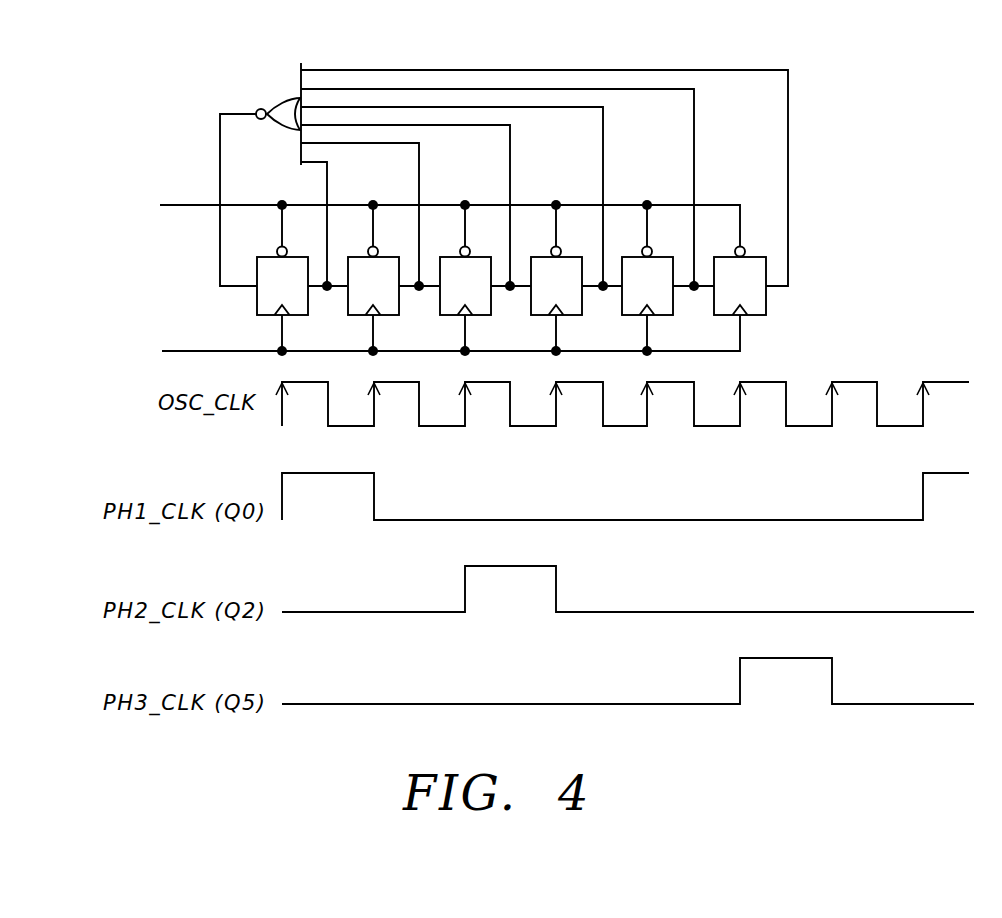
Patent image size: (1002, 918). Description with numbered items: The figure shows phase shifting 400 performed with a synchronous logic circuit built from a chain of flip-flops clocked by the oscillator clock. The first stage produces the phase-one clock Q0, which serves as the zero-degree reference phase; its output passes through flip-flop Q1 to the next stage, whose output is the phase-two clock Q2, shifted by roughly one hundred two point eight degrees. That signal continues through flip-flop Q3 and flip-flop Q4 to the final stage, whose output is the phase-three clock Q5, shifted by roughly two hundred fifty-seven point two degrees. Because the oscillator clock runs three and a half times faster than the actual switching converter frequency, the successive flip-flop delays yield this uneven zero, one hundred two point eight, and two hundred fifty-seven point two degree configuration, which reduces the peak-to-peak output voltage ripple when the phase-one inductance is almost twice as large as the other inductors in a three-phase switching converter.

The phase shifting 400 is at (216, 49).
The PH1_CLK Q0 is at (302, 278).
The flip-flop Q1 is at (393, 278).
The PH2_CLK Q2 is at (485, 278).
The flip-flop Q3 is at (576, 278).
The flip-flop Q4 is at (668, 278).
The PH3_CLK Q5 is at (740, 281).